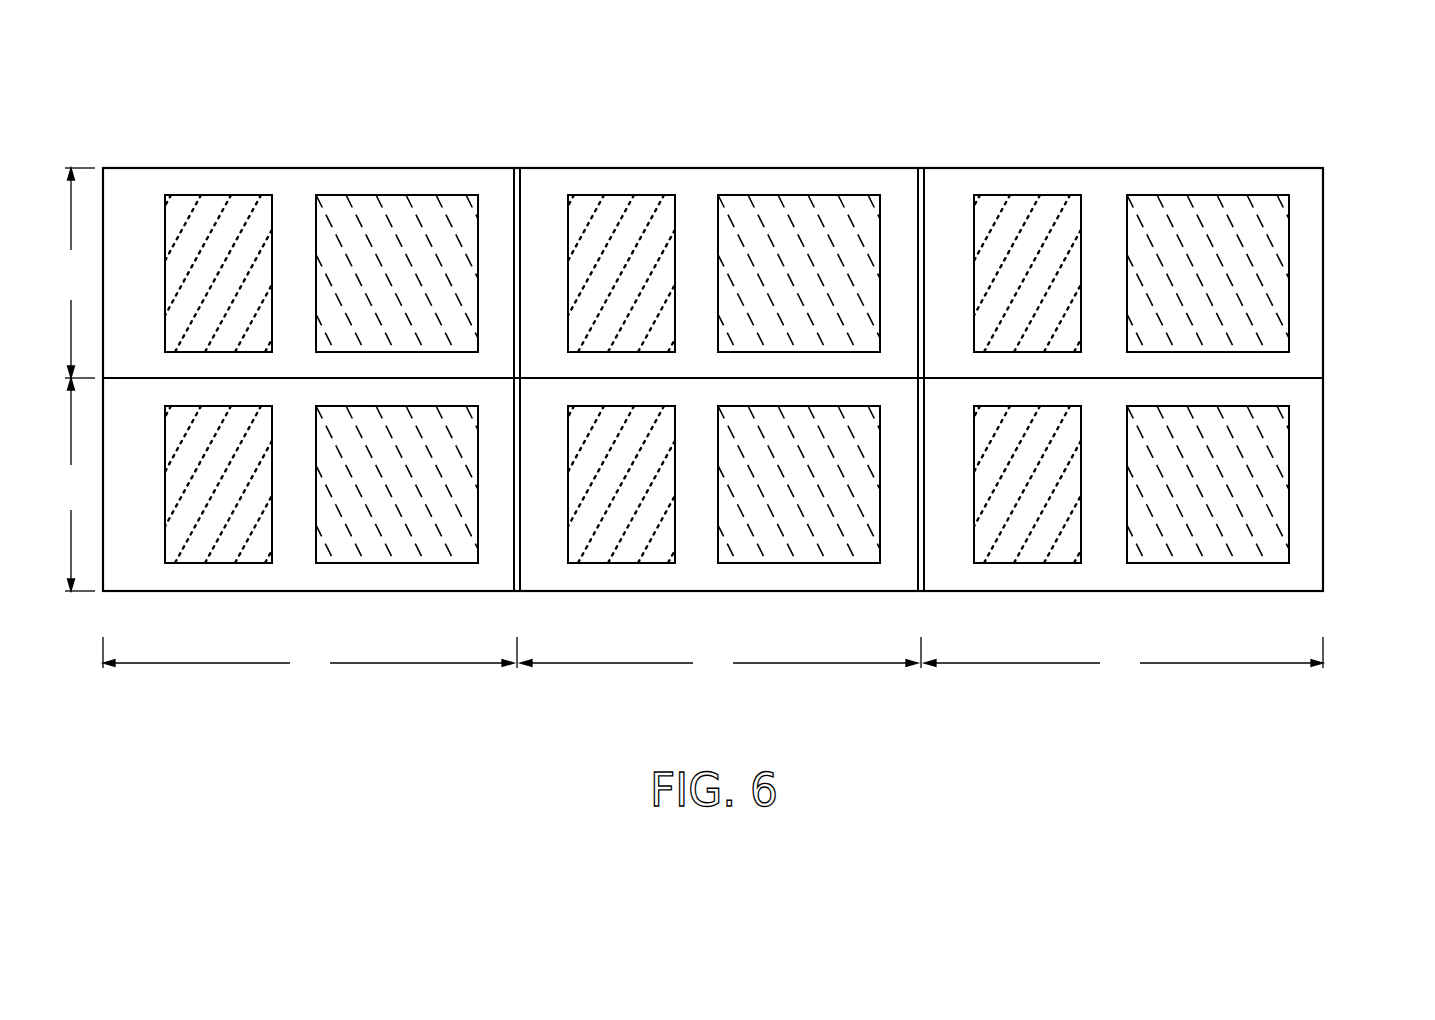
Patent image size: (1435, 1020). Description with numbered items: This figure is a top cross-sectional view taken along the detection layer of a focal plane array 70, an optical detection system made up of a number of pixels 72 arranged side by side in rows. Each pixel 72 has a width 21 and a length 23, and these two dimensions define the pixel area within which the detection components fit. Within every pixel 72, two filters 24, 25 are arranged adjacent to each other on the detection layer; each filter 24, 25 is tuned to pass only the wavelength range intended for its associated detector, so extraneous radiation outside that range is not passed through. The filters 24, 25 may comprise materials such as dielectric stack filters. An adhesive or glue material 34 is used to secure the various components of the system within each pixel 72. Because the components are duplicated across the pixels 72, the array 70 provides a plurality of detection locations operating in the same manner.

The focal plane array 70 is at (763, 373).
The pixel 72 is at (1290, 589).
The length 23 is at (73, 379).
The width 21 is at (713, 658).
The adhesive or glue material 34 is at (114, 289).
The filter 24 is at (200, 289).
The filter 25 is at (379, 289).